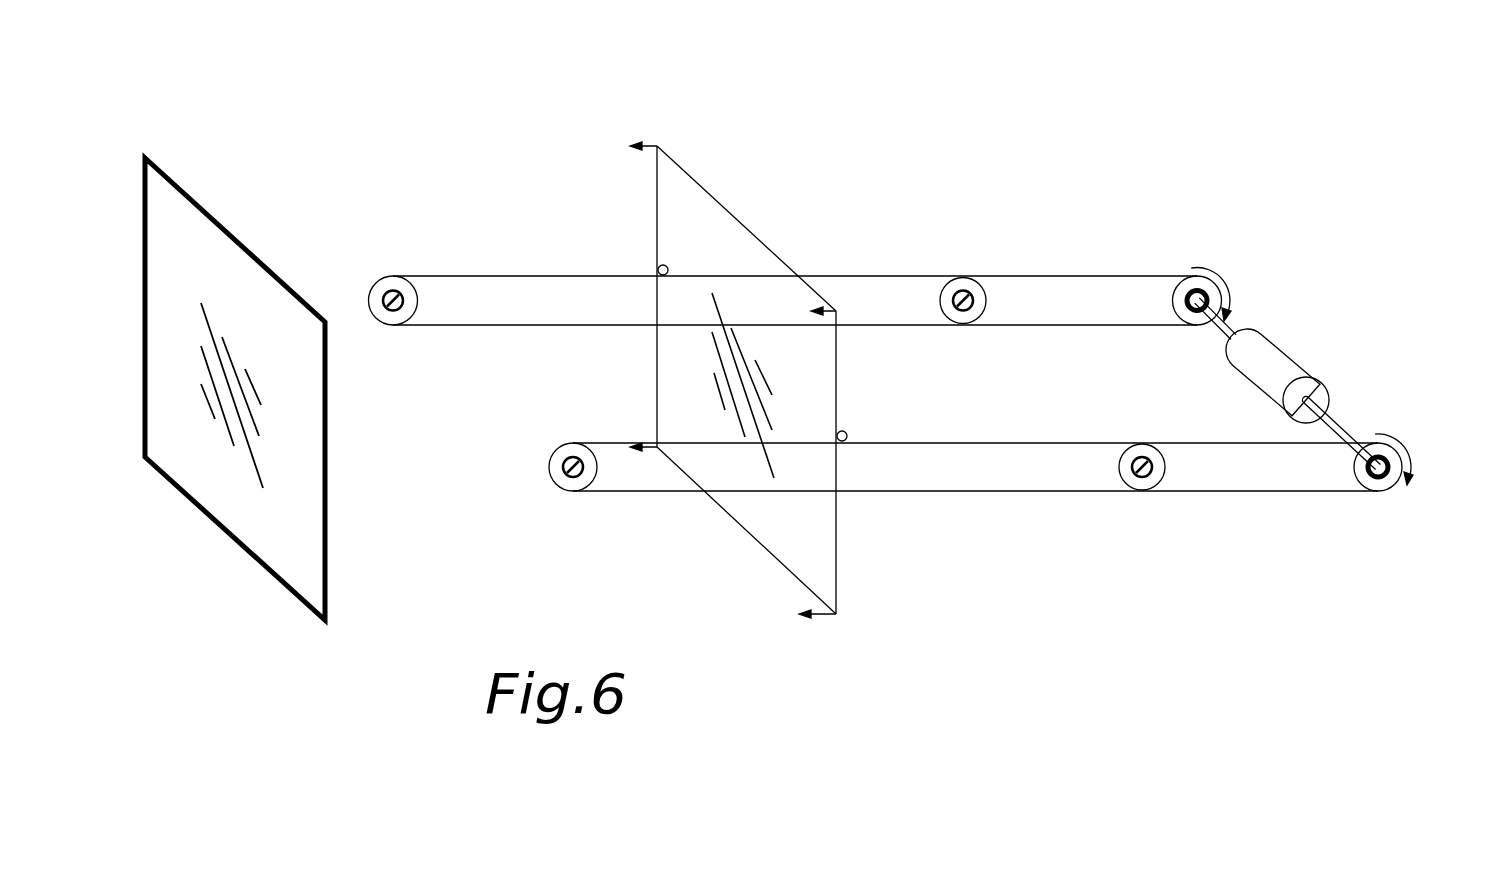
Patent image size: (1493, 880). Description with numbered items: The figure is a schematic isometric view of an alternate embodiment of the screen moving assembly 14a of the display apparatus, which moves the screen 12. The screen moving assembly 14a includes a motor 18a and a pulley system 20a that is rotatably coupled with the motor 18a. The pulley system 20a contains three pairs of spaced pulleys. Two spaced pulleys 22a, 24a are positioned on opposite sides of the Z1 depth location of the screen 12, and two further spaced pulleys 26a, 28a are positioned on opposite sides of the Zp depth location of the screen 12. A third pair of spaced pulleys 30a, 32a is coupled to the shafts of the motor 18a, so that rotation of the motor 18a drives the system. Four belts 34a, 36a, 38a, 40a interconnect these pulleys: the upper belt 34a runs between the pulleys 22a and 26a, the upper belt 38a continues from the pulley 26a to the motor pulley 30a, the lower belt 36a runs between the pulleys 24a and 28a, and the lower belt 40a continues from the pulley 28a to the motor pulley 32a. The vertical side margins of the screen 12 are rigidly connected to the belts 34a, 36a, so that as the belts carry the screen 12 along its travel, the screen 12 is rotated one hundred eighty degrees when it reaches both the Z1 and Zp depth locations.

The screen 12 is at (677, 196).
The screen moving assembly 14a is at (913, 85).
The motor 18a is at (1285, 356).
The pulley system 20a is at (963, 230).
The pulley 22a is at (403, 288).
The pulley 24a is at (560, 478).
The pulley 26a is at (950, 313).
The pulley 28a is at (1130, 477).
The pulley 30a is at (1215, 268).
The pulley 32a is at (1402, 441).
The belt 34a is at (843, 276).
The belt 36a is at (925, 442).
The belt 38a is at (1017, 274).
The belt 40a is at (1218, 490).